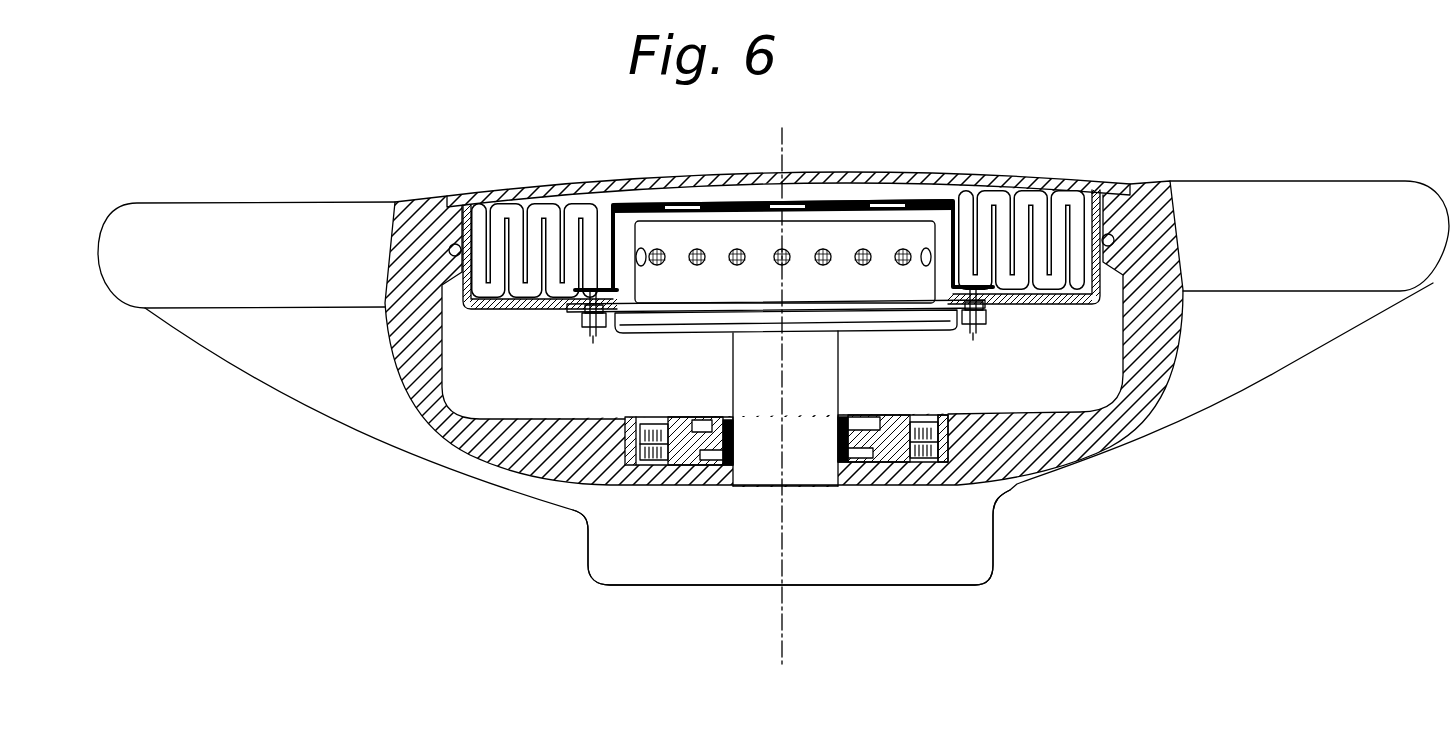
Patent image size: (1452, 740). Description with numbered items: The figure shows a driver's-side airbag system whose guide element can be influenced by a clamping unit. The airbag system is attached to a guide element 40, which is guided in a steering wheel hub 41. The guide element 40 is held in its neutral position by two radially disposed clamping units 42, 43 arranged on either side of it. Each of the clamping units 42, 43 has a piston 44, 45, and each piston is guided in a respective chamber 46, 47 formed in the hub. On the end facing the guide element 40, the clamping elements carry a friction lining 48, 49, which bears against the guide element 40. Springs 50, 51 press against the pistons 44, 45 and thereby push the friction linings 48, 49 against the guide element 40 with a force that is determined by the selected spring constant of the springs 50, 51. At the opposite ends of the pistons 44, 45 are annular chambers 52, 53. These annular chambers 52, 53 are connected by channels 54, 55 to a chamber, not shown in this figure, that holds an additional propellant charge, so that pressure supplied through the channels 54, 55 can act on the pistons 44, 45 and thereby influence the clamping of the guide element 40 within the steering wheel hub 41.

The guide element 40 is at (797, 462).
The steering wheel hub 41 is at (1030, 437).
The clamping unit 42 is at (645, 494).
The clamping unit 43 is at (910, 491).
The piston 44 is at (680, 462).
The piston 45 is at (896, 462).
The chamber 46 is at (642, 486).
The chamber 47 is at (930, 470).
The friction lining 48 is at (736, 486).
The friction lining 49 is at (843, 462).
The spring 50 is at (600, 488).
The spring 51 is at (950, 450).
The annular chamber 52 is at (702, 422).
The annular chamber 53 is at (874, 422).
The channel 54 is at (705, 462).
The channel 55 is at (870, 462).